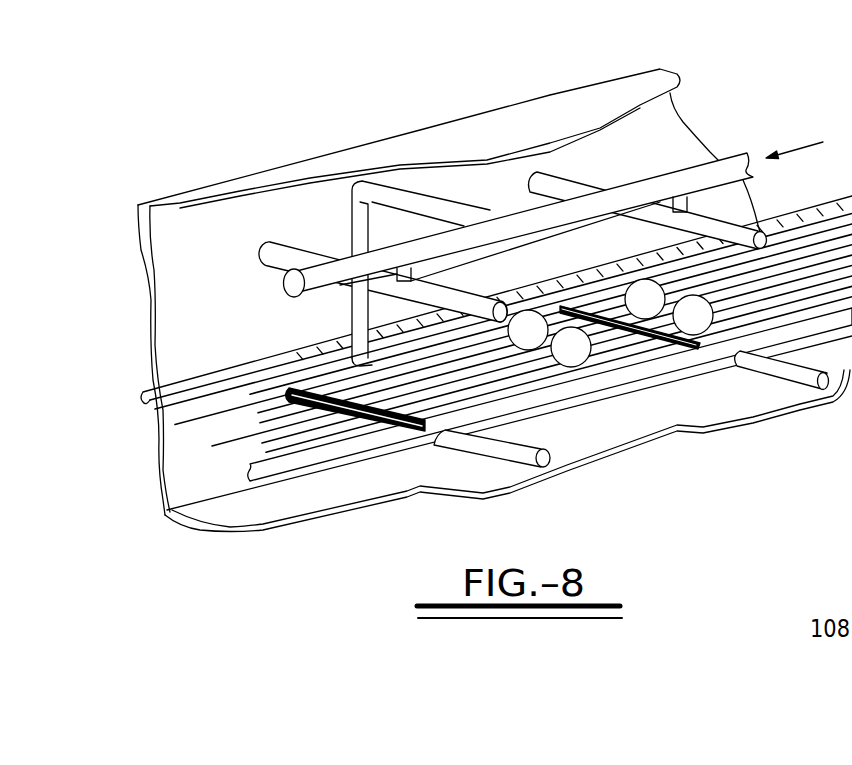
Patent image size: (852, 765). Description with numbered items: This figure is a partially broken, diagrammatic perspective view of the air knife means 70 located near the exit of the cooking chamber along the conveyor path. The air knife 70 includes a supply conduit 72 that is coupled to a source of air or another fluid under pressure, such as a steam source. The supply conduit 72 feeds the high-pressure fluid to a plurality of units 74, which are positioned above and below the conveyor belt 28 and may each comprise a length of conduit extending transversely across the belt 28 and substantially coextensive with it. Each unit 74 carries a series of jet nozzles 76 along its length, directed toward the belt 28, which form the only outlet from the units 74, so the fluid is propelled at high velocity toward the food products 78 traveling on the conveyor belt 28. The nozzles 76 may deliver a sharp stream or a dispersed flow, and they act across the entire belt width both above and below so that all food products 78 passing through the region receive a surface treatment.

The air knife means 70 is at (273, 126).
The supply conduit 72 is at (721, 165).
The units 74 is at (273, 257).
The jet nozzles 76 is at (800, 377).
The food products 78 is at (578, 355).
The conveyor belt 28 is at (777, 297).